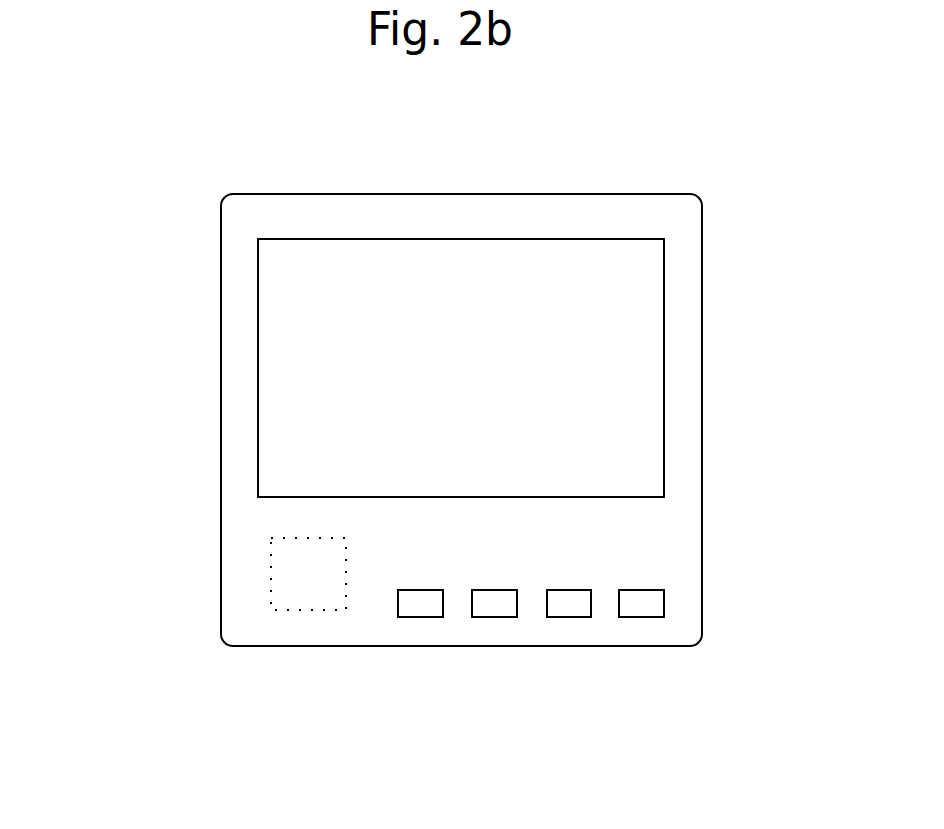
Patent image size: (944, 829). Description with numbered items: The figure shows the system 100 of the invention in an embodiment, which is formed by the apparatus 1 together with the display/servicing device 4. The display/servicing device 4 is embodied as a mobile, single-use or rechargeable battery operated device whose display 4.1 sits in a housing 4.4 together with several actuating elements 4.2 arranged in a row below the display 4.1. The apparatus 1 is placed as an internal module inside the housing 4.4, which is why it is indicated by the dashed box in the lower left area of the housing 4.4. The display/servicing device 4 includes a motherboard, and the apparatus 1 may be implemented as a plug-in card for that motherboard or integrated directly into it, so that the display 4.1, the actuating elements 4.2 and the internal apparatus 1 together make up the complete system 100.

The system 100 is at (140, 174).
The display/servicing device 4 is at (227, 319).
The housing 4.4 is at (683, 207).
The display 4.1 is at (615, 372).
The actuating elements 4.2 is at (420, 605).
The apparatus 1 is at (278, 566).